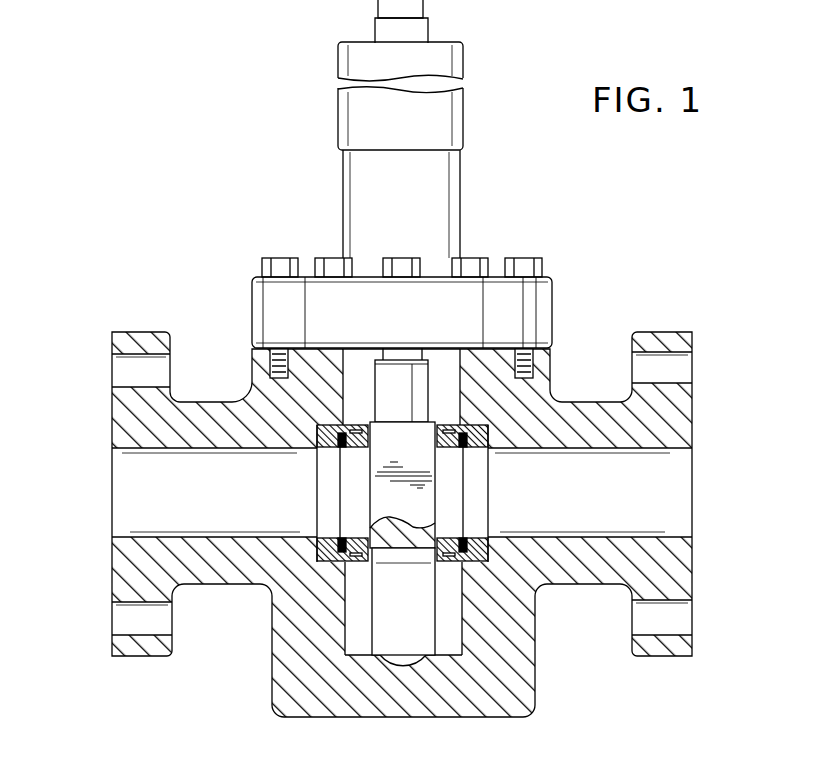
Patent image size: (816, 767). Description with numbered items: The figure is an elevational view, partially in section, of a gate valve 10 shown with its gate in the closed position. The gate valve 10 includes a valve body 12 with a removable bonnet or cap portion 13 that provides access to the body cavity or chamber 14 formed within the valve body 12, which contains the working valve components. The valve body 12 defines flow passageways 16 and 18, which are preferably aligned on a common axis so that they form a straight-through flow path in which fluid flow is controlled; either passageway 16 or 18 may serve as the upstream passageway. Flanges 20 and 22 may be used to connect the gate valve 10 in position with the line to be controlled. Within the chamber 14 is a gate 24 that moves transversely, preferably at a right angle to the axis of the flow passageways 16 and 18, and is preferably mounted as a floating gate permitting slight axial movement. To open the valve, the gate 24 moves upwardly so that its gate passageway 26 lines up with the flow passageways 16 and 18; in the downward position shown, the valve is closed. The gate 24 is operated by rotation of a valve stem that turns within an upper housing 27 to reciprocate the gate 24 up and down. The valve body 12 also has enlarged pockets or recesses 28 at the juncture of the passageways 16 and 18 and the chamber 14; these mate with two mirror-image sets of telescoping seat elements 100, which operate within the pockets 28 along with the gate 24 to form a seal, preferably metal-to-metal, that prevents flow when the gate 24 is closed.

The gate valve 10 is at (155, 127).
The valve body 12 is at (508, 702).
The bonnet or cap portion 13 is at (540, 313).
The body cavity or chamber 14 is at (360, 397).
The flow passageway 16 is at (142, 498).
The flow passageway 18 is at (673, 473).
The flange 20 is at (112, 563).
The flange 22 is at (692, 558).
The gate 24 is at (417, 510).
The gate passageway 26 is at (393, 600).
The upper housing 27 is at (442, 132).
The pockets or recesses 28 is at (310, 555).
The seat elements 100 is at (322, 448).